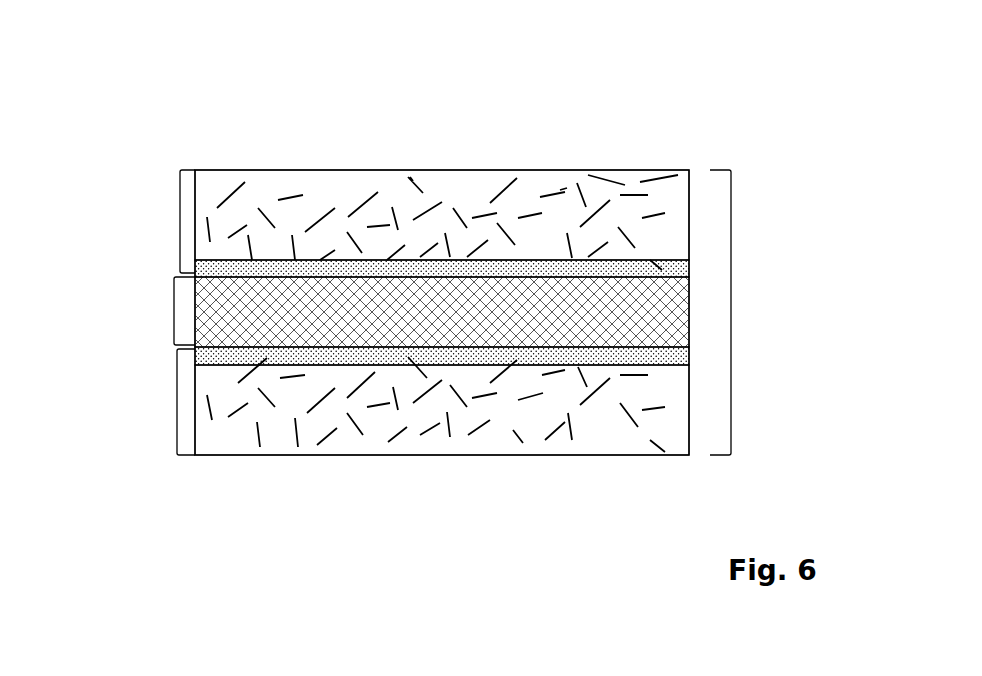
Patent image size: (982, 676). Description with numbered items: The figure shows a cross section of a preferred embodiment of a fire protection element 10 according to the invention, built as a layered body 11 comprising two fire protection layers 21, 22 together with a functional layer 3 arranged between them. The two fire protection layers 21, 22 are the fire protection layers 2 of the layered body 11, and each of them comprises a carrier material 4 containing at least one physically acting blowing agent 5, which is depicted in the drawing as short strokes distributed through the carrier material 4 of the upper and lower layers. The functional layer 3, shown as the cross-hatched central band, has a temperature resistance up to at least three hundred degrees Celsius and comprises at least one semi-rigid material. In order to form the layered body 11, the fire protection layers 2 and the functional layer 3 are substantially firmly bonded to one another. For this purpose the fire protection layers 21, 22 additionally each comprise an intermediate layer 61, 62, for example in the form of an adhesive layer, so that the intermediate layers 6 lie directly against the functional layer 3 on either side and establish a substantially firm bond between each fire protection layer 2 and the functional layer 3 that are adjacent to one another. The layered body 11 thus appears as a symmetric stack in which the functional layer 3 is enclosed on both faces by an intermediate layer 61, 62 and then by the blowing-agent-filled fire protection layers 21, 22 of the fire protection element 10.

The fire protection element 10 is at (539, 106).
The fire protection layers 2 is at (359, 312).
The fire protection layer 21 is at (180, 223).
The functional layer 3 is at (174, 313).
The fire protection layer 22 is at (156, 402).
The carrier material 4 is at (327, 180).
The physically acting blowing agent 5 is at (420, 178).
The intermediate layers 6 is at (572, 316).
The intermediate layer 61 is at (689, 266).
The intermediate layer 62 is at (689, 362).
The layered body 11 is at (733, 313).